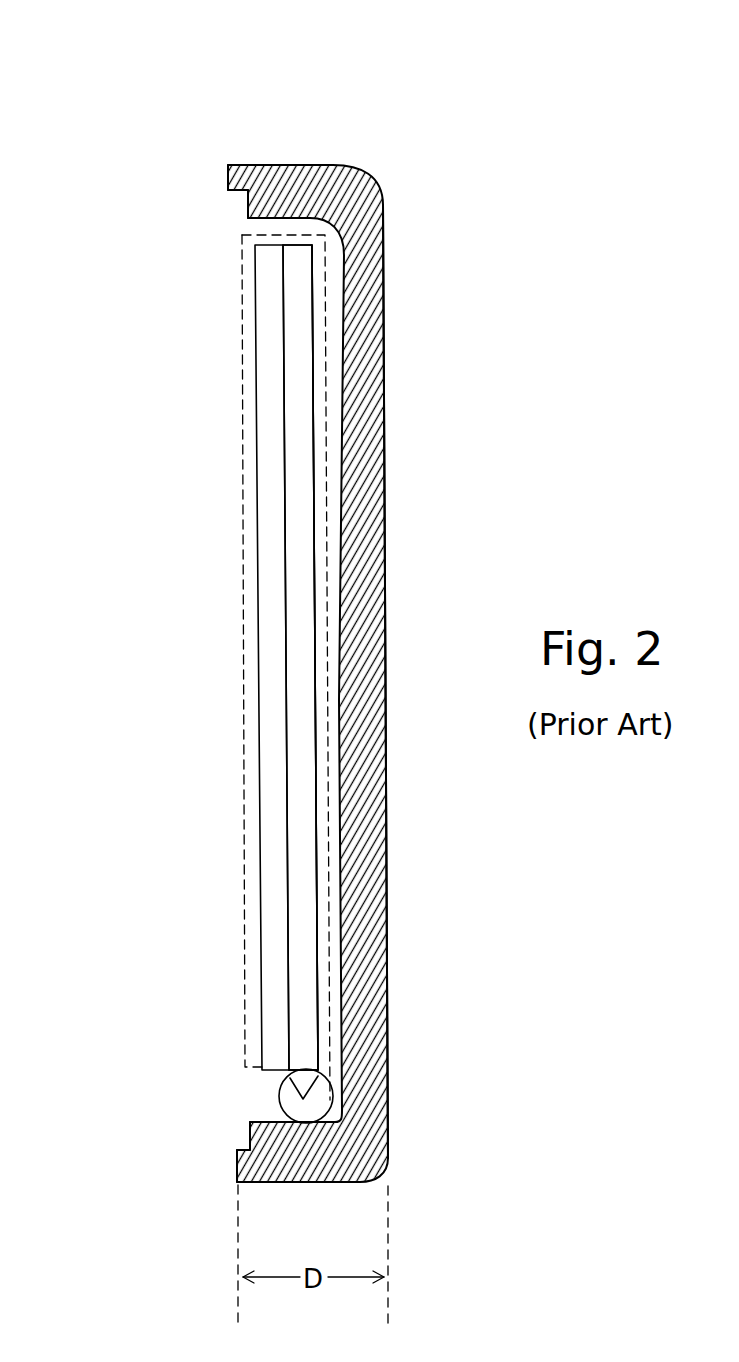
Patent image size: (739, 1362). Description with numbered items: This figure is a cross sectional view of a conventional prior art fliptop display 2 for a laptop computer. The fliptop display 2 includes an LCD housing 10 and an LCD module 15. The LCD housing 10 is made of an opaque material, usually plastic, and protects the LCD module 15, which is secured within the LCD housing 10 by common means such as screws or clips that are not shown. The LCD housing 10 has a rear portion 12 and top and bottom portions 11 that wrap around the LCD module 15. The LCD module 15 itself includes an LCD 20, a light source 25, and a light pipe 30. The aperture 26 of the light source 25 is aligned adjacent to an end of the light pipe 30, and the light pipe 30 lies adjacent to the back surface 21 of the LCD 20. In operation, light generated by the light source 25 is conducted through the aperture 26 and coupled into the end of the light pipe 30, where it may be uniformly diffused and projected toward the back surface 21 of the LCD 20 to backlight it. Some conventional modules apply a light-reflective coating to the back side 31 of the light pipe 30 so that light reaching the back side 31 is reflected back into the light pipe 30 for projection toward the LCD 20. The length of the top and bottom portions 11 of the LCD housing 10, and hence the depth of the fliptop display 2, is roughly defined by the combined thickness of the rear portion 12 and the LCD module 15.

The fliptop display 2 is at (444, 593).
The LCD housing 10 is at (419, 296).
The top and bottom portions 11 is at (277, 147).
The rear portion 12 is at (405, 582).
The LCD module 15 is at (238, 369).
The LCD 20 is at (271, 465).
The back surface 21 is at (286, 510).
The light source 25 is at (274, 1104).
The aperture 26 is at (302, 1061).
The light pipe 30 is at (305, 884).
The back side 31 is at (317, 924).